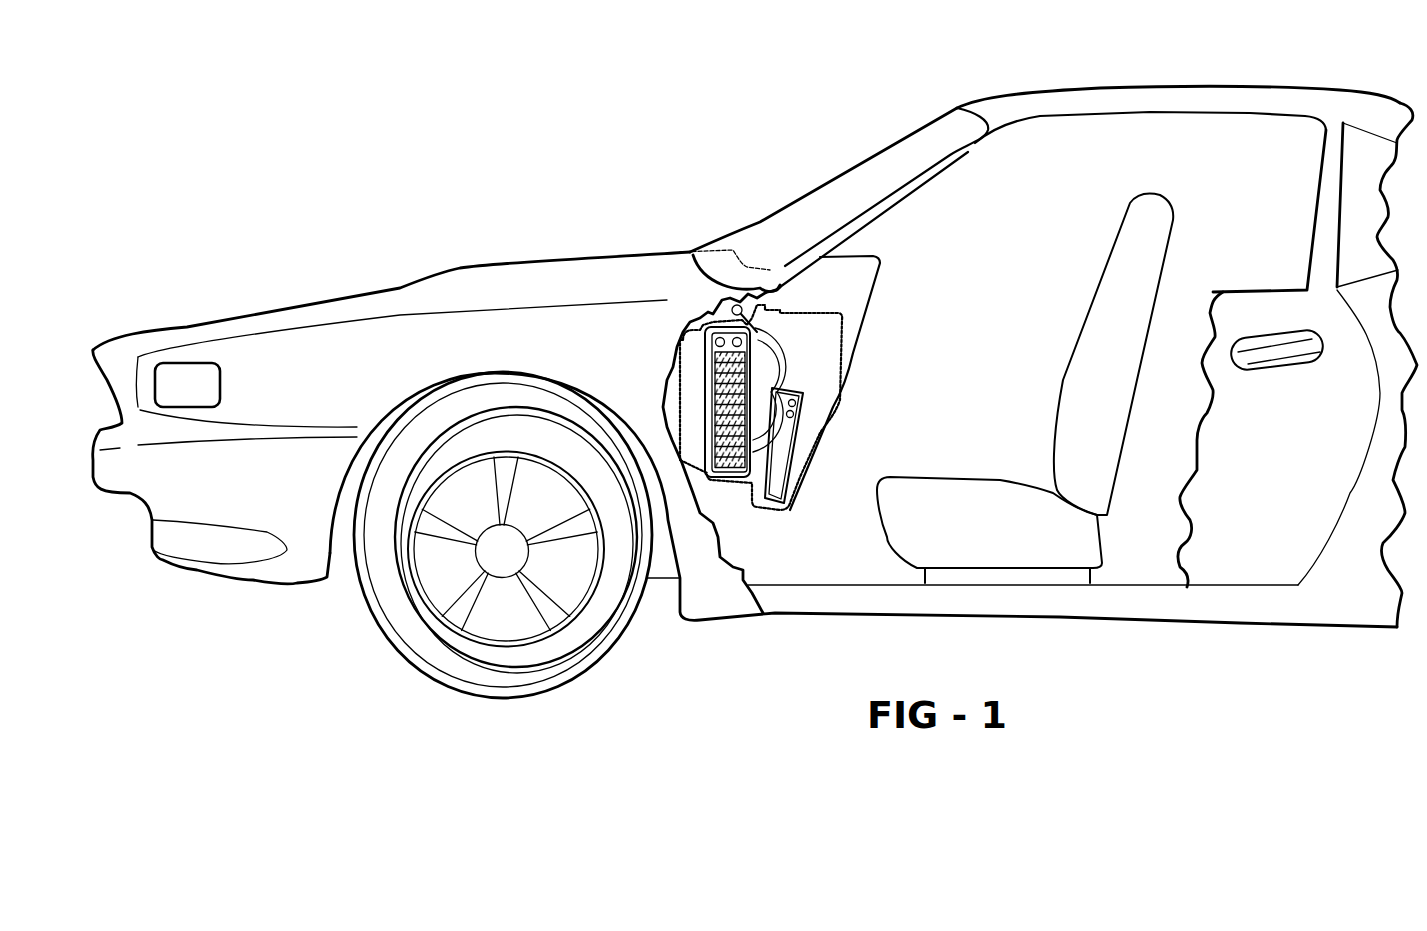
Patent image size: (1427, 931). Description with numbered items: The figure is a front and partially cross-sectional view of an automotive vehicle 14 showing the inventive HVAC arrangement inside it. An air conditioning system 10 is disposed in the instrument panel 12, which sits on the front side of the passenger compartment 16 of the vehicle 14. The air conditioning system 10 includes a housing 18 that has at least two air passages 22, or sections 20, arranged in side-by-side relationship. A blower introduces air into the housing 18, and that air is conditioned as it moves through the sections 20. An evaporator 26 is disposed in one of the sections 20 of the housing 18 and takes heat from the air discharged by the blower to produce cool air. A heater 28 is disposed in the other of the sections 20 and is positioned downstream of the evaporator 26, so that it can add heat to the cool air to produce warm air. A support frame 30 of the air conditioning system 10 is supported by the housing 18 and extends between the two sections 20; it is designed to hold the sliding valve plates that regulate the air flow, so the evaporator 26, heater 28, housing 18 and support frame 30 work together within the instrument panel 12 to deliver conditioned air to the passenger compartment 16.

The air conditioning system 10 is at (903, 349).
The instrument panel 12 is at (830, 277).
The vehicle 14 is at (1087, 103).
The passenger compartment 16 is at (1255, 192).
The housing 18 is at (845, 327).
The sections 20 is at (753, 402).
The air passages 22 is at (801, 349).
The evaporator 26 is at (726, 453).
The heater 28 is at (780, 472).
The support frame 30 is at (763, 340).